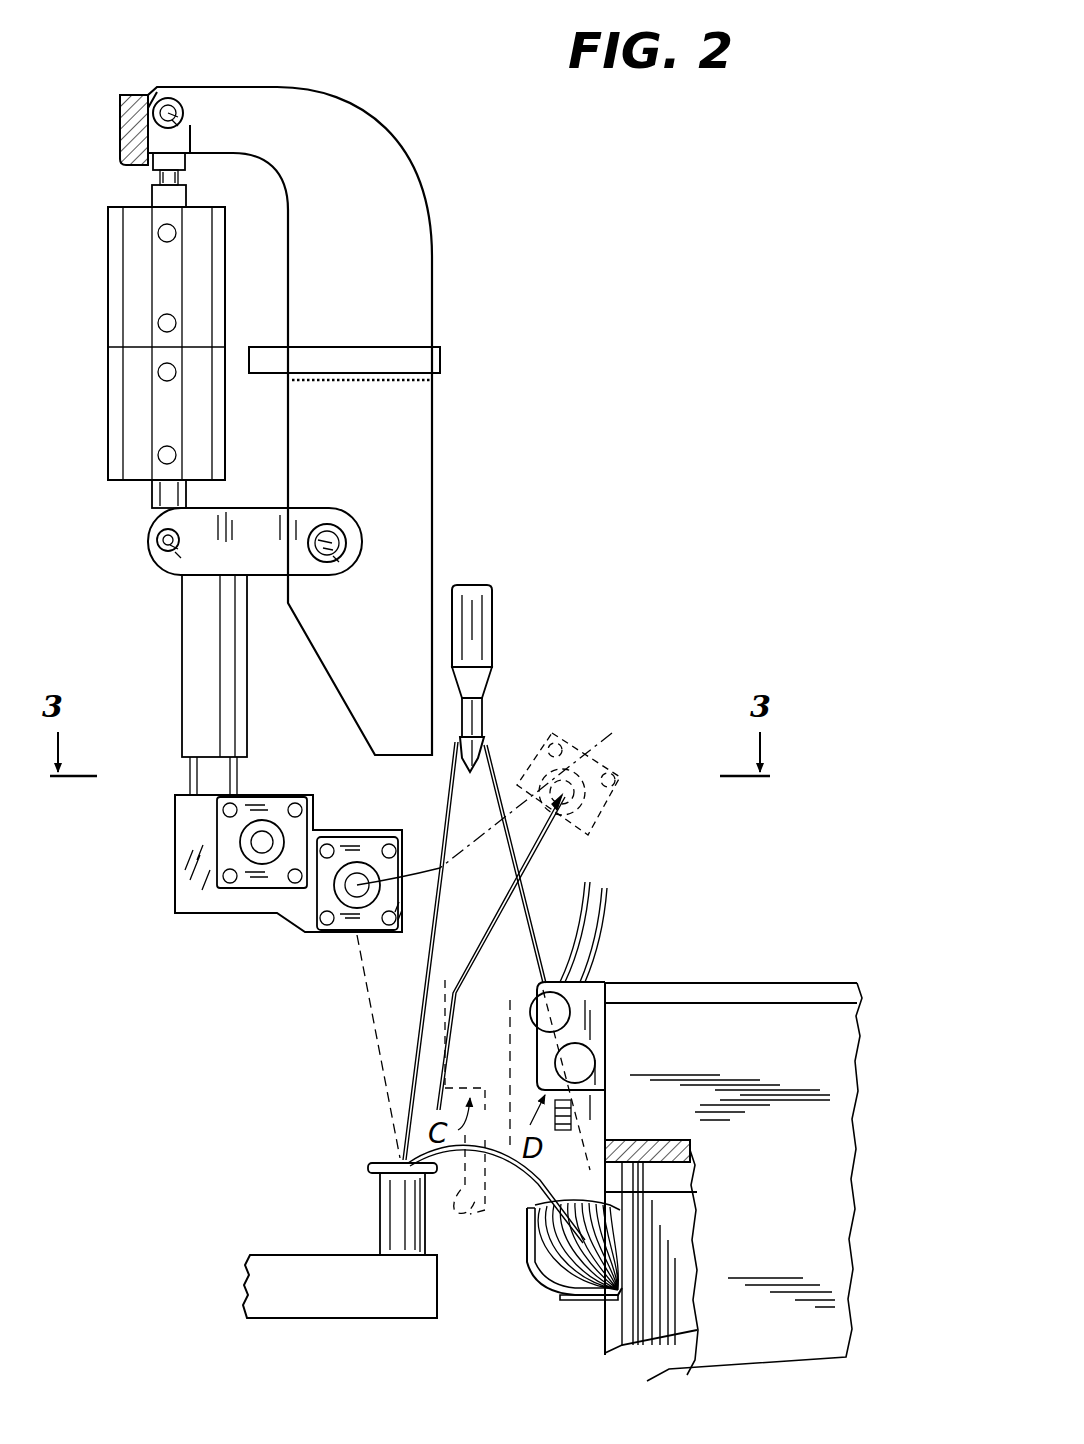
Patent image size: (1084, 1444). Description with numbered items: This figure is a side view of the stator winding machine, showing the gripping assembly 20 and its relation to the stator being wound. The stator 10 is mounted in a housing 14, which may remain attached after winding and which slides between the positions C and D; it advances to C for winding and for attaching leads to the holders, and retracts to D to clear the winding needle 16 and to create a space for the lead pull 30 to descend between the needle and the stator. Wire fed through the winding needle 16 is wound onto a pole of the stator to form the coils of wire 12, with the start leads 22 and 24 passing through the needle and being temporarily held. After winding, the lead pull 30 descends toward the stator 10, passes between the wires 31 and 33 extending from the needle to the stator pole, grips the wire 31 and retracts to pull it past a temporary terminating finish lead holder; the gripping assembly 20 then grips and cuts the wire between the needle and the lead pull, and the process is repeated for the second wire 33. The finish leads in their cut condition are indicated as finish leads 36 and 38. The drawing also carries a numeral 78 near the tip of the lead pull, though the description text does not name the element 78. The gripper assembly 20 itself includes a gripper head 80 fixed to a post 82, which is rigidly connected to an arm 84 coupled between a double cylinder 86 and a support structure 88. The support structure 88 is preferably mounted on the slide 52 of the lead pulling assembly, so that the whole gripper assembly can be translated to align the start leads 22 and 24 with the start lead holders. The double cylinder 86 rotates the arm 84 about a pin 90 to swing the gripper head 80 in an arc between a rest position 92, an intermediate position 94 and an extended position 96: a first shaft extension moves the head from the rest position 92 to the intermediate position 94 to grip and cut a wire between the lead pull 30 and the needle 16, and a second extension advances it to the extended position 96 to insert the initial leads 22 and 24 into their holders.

The stator 10 is at (530, 1275).
The coils of wire 12 is at (578, 1298).
The housing 14 is at (720, 970).
The winding needle 16 is at (377, 1228).
The gripping assembly 20 is at (484, 296).
The start lead 22 is at (382, 1060).
The start lead 24 is at (376, 1000).
The lead pull 30 is at (512, 633).
The wire 31 is at (523, 940).
The wire 33 is at (527, 1182).
The finish lead 36 is at (580, 895).
The finish lead 38 is at (609, 905).
The slide 52 is at (126, 127).
The needle tip 78 is at (483, 741).
The gripper head 80 is at (212, 905).
The post 82 is at (187, 695).
The arm 84 is at (205, 552).
The double cylinder 86 is at (110, 442).
The support structure 88 is at (430, 458).
The pin 90 is at (335, 548).
The rest position 92 is at (312, 942).
The intermediate position 94 is at (436, 864).
The extended position 96 is at (633, 768).